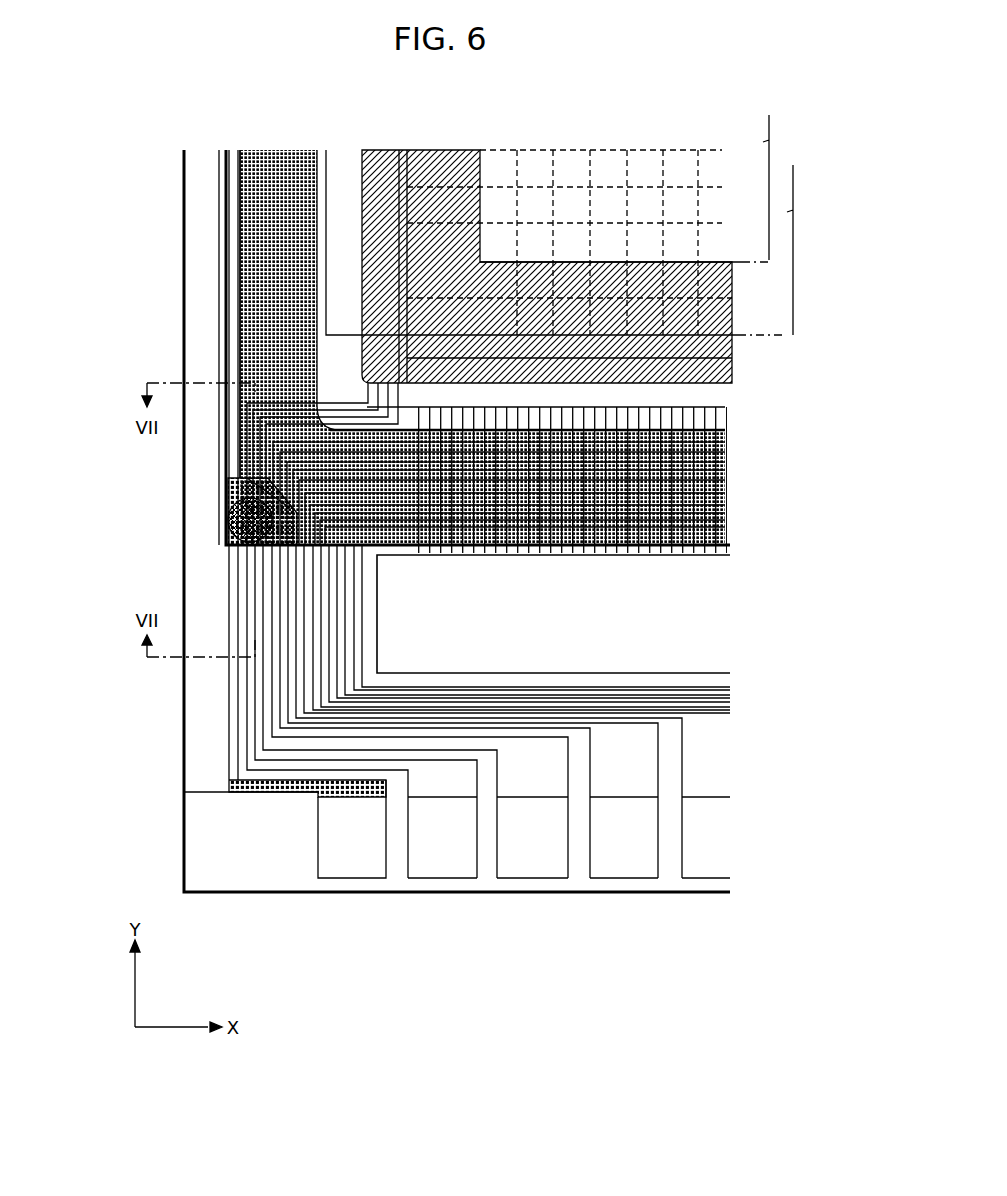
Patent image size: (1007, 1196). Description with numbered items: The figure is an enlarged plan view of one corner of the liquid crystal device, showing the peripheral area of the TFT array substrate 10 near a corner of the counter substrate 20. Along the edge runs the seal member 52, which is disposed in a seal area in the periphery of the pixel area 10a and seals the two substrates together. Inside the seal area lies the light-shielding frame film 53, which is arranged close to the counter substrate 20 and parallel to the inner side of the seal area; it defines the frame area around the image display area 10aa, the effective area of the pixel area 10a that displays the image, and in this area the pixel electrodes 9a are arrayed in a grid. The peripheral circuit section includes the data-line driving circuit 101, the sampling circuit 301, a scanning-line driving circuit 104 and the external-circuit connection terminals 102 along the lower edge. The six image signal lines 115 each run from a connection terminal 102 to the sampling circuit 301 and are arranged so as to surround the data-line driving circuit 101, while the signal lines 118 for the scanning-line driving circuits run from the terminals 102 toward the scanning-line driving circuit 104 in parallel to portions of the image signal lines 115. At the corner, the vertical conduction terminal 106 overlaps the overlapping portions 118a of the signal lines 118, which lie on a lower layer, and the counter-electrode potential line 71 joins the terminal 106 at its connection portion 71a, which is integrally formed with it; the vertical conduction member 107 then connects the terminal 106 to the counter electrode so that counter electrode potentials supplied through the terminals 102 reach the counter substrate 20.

The TFT array substrate 10 is at (300, 893).
The pixel area 10a is at (812, 250).
The image display area 10aa is at (793, 187).
The counter substrate 20 is at (228, 197).
The seal member 52 is at (252, 247).
The light-shielding frame film 53 is at (460, 150).
The pixel electrode 9a is at (530, 160).
The scanning-line driving circuit 104 is at (340, 160).
The counter-electrode potential line 71 is at (220, 287).
The connection portion 71a is at (223, 508).
The sampling circuit 301 is at (722, 394).
The image signal line 115 is at (727, 447).
The signal line for the scanning-line driving circuit 118 is at (272, 593).
The overlapping portion 118a is at (218, 487).
The data-line driving circuit 101 is at (705, 620).
The external-circuit connection terminal 102 is at (360, 865).
The vertical conduction terminal 106 is at (225, 553).
The vertical conduction member 107 is at (225, 532).